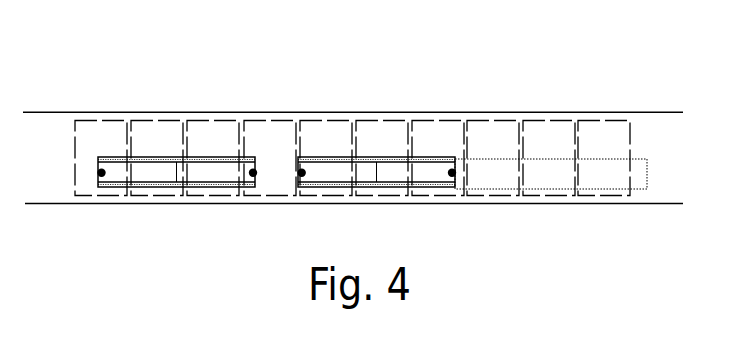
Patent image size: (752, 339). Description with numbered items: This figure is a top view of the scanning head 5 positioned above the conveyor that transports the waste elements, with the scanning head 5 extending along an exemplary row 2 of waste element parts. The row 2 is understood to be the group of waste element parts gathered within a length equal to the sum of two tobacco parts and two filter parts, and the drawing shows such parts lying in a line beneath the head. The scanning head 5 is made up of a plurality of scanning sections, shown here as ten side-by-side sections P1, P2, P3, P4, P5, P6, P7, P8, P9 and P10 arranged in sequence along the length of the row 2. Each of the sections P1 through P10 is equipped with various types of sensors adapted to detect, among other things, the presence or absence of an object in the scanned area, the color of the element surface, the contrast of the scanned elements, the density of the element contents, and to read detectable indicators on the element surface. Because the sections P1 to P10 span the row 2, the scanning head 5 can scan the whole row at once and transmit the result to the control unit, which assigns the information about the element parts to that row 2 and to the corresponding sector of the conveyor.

The row 2 is at (225, 227).
The scanning head 5 is at (361, 105).
The scanning section P1 is at (101, 158).
The scanning section P2 is at (157, 158).
The scanning section P3 is at (213, 158).
The scanning section P4 is at (270, 158).
The scanning section P5 is at (326, 158).
The scanning section P6 is at (382, 158).
The scanning section P7 is at (438, 158).
The scanning section P8 is at (493, 158).
The scanning section P9 is at (549, 158).
The scanning section P10 is at (604, 158).